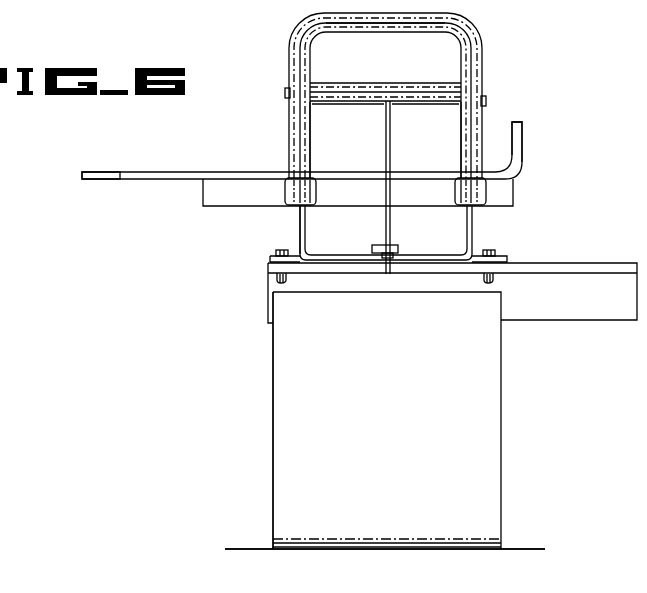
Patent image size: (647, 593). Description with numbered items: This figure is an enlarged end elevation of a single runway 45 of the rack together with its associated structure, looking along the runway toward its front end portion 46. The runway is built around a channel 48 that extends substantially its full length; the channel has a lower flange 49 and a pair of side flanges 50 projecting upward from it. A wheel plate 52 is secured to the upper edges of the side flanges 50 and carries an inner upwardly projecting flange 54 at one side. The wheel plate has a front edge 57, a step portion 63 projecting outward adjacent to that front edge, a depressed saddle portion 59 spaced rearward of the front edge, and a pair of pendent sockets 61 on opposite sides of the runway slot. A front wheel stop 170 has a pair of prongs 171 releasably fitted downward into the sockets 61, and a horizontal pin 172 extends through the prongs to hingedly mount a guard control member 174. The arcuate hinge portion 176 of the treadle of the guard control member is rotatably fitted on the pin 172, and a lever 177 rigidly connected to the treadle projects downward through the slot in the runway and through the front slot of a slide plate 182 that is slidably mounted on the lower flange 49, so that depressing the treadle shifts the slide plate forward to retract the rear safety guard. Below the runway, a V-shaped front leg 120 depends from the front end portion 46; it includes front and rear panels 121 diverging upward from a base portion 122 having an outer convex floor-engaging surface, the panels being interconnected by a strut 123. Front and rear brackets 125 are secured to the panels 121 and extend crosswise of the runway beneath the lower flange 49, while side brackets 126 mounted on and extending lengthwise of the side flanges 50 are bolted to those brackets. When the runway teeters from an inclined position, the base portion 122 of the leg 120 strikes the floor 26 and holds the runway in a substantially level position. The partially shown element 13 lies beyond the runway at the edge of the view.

The frame 13 is at (640, 174).
The floor 26 is at (254, 549).
The runway 45 is at (280, 164).
The front end portion 46 is at (215, 172).
The channel 48 is at (298, 229).
The lower flange 49 is at (360, 256).
The side flange 50 is at (305, 223).
The wheel plate 52 is at (440, 172).
The inner upwardly projecting flange 54 is at (520, 146).
The front edge 57 is at (358, 172).
The depressed saddle portion 59 is at (211, 203).
The pendent socket 61 is at (316, 192).
The step portion 63 is at (96, 172).
The V-shaped front leg 120 is at (283, 502).
The front and rear panels 121 is at (392, 420).
The base portion 122 is at (378, 551).
The strut 123 is at (385, 571).
The front and rear brackets 125 is at (583, 307).
The side bracket 126 is at (297, 242).
The front wheel stop 170 is at (405, 18).
The prong 171 is at (302, 125).
The horizontal pin 172 is at (285, 92).
The guard control member 174 is at (440, 78).
The arcuate hinge portion 176 is at (362, 90).
The lever 177 is at (389, 222).
The slide plate 182 is at (396, 252).